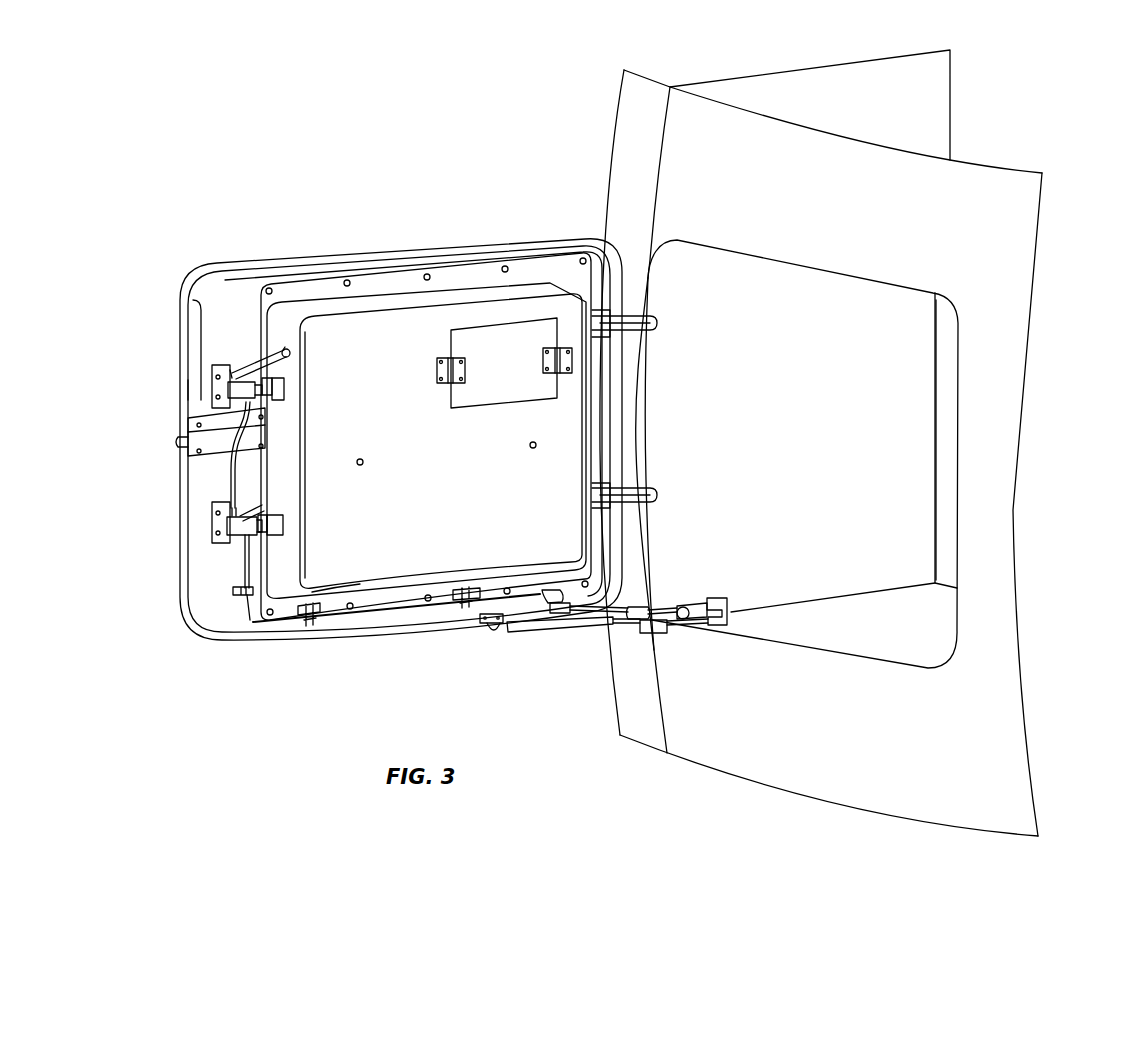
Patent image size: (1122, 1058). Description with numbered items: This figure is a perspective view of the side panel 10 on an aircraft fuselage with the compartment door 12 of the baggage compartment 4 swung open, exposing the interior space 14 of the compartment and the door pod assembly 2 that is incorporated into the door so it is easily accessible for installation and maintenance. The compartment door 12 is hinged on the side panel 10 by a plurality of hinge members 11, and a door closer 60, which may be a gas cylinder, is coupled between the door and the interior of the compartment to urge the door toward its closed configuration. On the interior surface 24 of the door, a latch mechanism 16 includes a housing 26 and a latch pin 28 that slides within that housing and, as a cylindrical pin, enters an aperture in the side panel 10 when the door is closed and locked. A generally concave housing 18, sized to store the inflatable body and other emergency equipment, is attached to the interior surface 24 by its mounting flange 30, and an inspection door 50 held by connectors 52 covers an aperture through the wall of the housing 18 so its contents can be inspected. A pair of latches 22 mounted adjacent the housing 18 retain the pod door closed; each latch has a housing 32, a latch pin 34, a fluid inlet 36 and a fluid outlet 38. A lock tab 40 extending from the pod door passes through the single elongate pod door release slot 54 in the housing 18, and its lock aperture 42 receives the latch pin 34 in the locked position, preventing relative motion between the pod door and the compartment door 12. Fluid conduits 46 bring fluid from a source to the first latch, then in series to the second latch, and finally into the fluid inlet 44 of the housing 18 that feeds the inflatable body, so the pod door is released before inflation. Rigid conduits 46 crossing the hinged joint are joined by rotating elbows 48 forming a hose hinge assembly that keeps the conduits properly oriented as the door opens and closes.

The door pod assembly 2 is at (478, 208).
The baggage compartment 4 is at (905, 420).
The side panel 10 is at (1018, 248).
The hinge members 11 is at (655, 325).
The compartment door 12 is at (250, 265).
The interior space 14 is at (918, 492).
The latch mechanism 16 is at (175, 440).
The housing 18 is at (548, 533).
The latches 22 is at (188, 389).
The interior surface 24 is at (205, 325).
The housing 26 is at (210, 455).
The latch pin 28 is at (200, 440).
The mounting flange 30 is at (330, 282).
The housing 32 is at (232, 390).
The latch pin 34 is at (263, 395).
The fluid inlet 36 is at (255, 412).
The fluid outlet 38 is at (230, 378).
The lock tab 40 is at (280, 390).
The lock aperture 42 is at (292, 360).
The fluid inlet 44 is at (283, 350).
The fluid conduits 46 is at (240, 370).
The elbows 48 is at (560, 625).
The inspection door 50 is at (495, 398).
The connectors 52 is at (443, 365).
The pod door release slot 54 is at (260, 548).
The door closer 60 is at (525, 633).